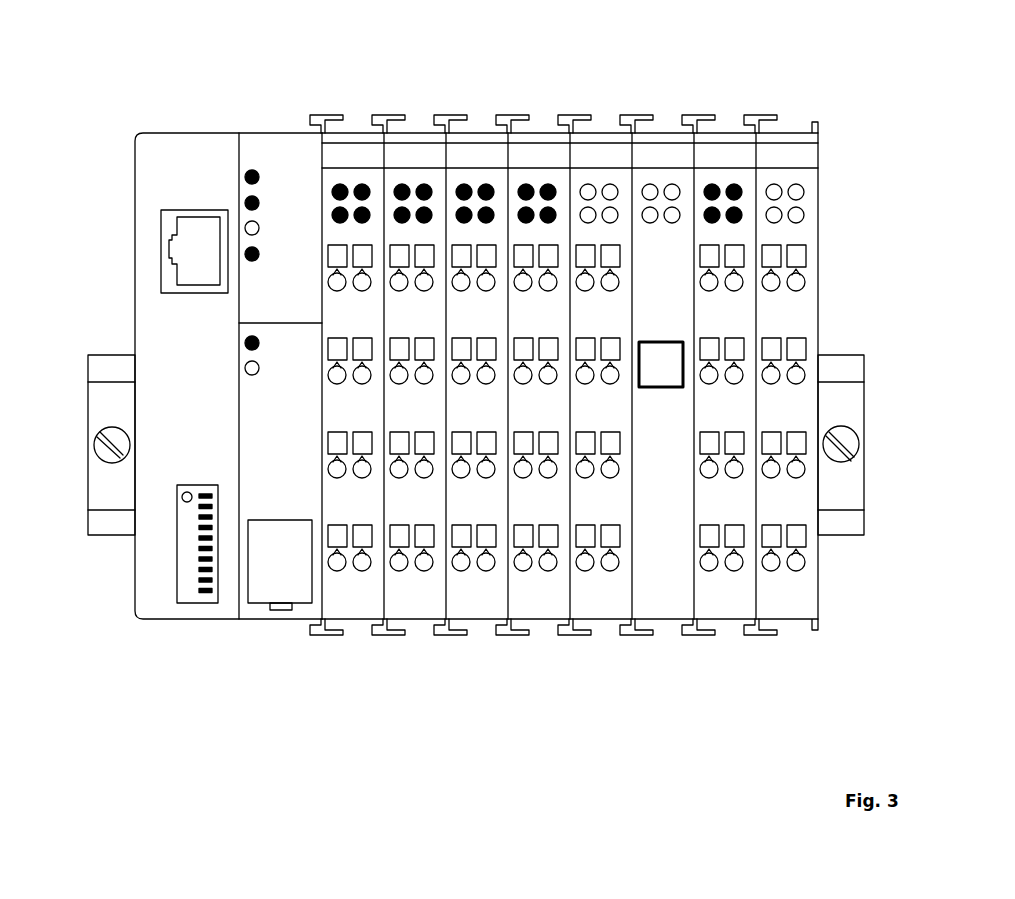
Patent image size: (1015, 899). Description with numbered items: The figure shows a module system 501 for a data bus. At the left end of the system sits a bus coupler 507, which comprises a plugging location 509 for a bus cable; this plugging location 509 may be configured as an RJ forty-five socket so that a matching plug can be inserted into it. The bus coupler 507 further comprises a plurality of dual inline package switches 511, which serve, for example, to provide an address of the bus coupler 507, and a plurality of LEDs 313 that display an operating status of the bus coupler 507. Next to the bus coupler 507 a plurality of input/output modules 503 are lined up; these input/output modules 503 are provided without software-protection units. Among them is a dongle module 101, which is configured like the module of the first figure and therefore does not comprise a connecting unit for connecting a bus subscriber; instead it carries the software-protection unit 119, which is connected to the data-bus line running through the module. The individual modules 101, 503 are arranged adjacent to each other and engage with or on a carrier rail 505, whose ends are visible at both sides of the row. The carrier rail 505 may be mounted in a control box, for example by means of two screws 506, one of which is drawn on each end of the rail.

The module system 501 is at (843, 146).
The bus coupler 507 is at (380, 105).
The LEDs 313 is at (246, 177).
The plugging location 509 is at (197, 260).
The dual inline package switches 511 is at (189, 587).
The input/output modules 503 is at (413, 610).
The dongle module 101 is at (652, 612).
The software-protection unit 119 is at (661, 364).
The carrier rail 505 is at (850, 403).
The screws 506 is at (841, 458).